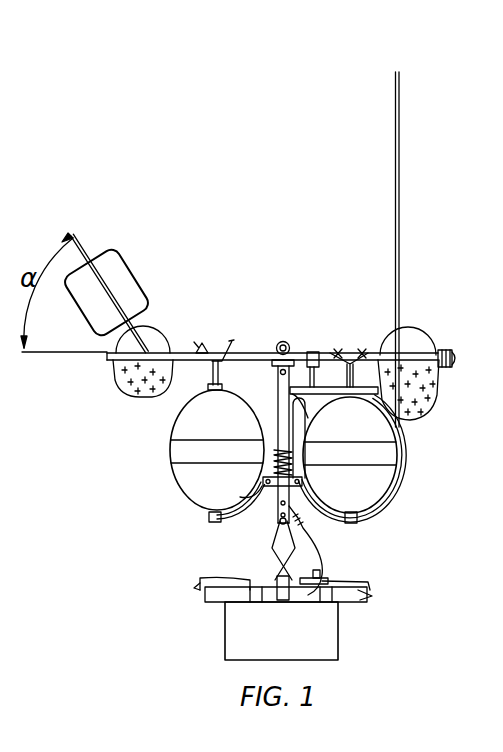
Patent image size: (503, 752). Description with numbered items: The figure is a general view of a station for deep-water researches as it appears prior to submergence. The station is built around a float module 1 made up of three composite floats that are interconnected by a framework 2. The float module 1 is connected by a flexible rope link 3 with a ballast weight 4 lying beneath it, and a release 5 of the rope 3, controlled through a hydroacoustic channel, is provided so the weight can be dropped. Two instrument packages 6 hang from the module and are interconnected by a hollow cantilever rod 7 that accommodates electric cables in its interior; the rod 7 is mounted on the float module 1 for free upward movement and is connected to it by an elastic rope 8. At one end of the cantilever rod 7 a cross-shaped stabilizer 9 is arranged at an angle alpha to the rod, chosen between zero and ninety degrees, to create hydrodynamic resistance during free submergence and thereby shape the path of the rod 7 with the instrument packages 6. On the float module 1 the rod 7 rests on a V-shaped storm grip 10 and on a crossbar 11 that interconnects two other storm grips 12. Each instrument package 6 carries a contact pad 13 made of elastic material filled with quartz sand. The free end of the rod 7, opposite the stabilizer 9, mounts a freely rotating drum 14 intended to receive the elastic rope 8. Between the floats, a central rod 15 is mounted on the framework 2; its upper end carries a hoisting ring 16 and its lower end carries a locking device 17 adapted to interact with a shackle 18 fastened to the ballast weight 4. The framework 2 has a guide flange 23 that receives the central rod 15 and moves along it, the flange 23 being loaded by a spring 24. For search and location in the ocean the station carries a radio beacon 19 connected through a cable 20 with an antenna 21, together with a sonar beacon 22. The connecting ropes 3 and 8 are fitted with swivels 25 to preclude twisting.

The float module 1 is at (180, 418).
The framework 2 is at (208, 518).
The flexible rope link 3 is at (310, 536).
The ballast weight 4 is at (332, 645).
The release 5 is at (215, 602).
The instrument packages 6 is at (120, 347).
The hollow cantilever rod 7 is at (230, 350).
The elastic rope 8 is at (420, 353).
The cross-shaped stabilizer 9 is at (110, 252).
The V-shaped storm grip 10 is at (201, 348).
The crossbar 11 is at (313, 353).
The storm grips 12 is at (358, 352).
The contact pad 13 is at (125, 383).
The freely rotating drum 14 is at (453, 356).
The central rod 15 is at (240, 497).
The hoisting ring 16 is at (281, 343).
The locking device 17 is at (273, 565).
The shackle 18 is at (317, 582).
The radio beacon 19 is at (303, 410).
The cable 20 is at (328, 393).
The antenna 21 is at (399, 222).
The sonar beacon 22 is at (263, 602).
The guide flange 23 is at (265, 481).
The spring 24 is at (275, 455).
The swivels 25 is at (278, 523).